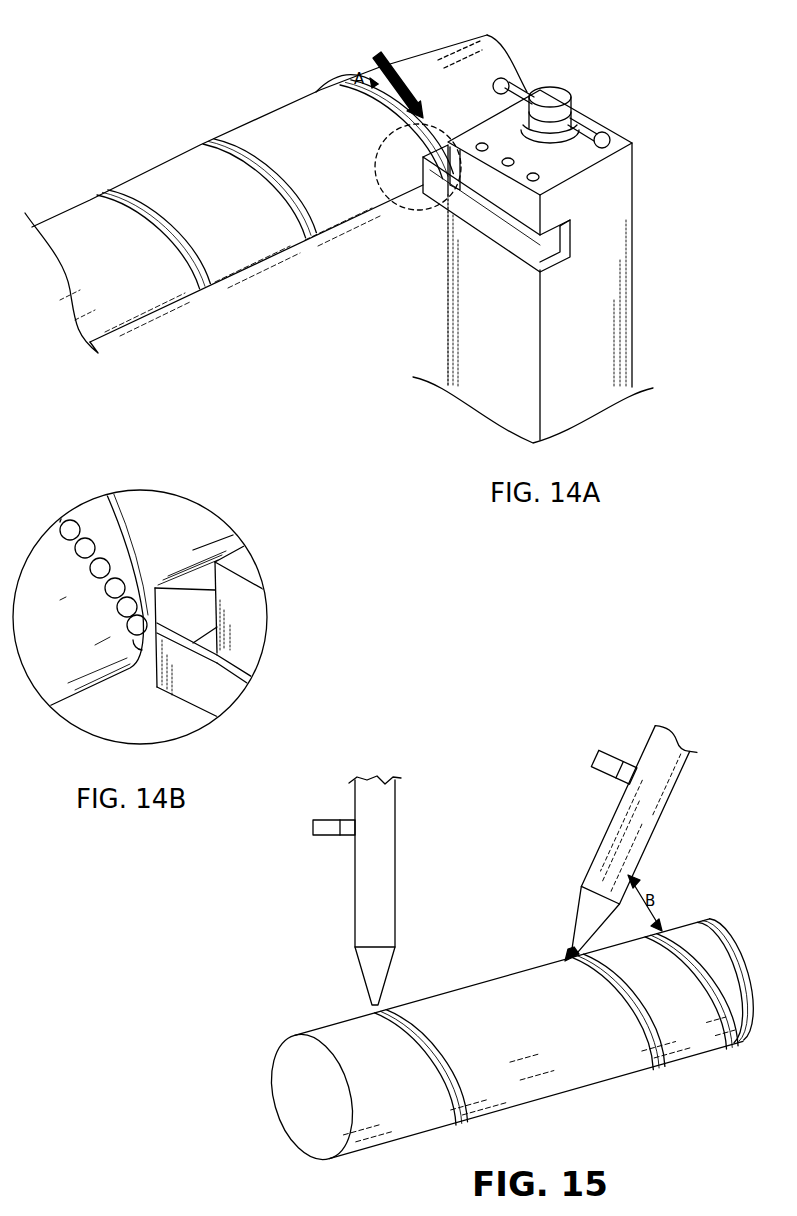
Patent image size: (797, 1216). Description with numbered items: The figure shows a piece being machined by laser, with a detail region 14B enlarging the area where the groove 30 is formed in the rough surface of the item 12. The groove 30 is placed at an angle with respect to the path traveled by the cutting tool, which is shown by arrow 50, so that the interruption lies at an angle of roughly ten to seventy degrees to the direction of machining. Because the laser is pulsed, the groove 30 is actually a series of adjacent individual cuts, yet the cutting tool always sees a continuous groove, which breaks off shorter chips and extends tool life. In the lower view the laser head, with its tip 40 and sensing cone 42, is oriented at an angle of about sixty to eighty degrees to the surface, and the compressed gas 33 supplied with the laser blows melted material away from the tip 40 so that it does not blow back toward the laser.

In FIG. 14A, the tubular conduit 12 is at (197, 162).
In FIG. 15, the tubular conduit 12 is at (442, 995).
In FIG. 14A, the groove 30 is at (253, 132).
In FIG. 15, the groove 30 is at (693, 930).
In FIG. 15, the compressed gas 33 is at (592, 763).
In FIG. 15, the tip 40 is at (566, 952).
In FIG. 15, the sensing cone 42 is at (358, 887).
In FIG. 14A, the arrow 50 is at (412, 98).
In FIG. 14A, the detail region of FIG. 14B is at (352, 105).